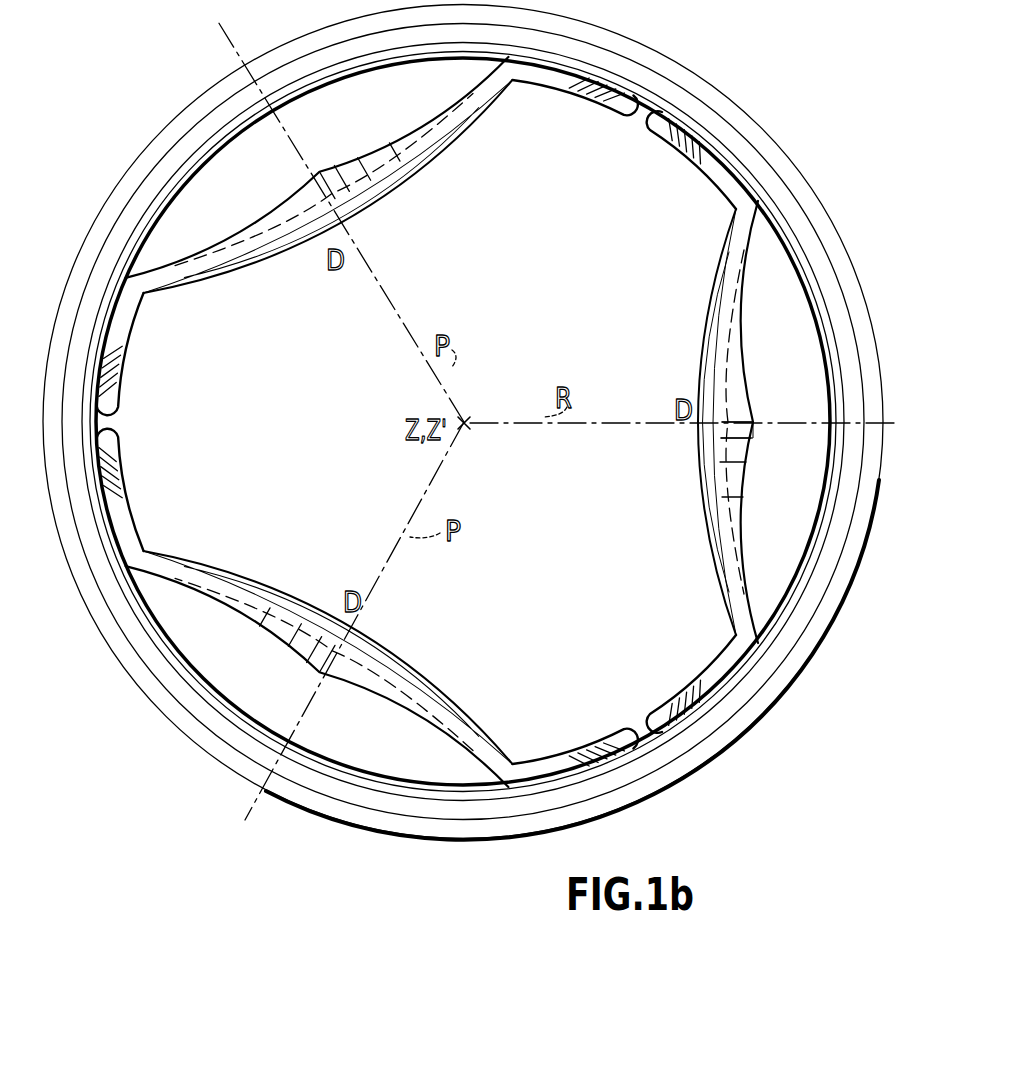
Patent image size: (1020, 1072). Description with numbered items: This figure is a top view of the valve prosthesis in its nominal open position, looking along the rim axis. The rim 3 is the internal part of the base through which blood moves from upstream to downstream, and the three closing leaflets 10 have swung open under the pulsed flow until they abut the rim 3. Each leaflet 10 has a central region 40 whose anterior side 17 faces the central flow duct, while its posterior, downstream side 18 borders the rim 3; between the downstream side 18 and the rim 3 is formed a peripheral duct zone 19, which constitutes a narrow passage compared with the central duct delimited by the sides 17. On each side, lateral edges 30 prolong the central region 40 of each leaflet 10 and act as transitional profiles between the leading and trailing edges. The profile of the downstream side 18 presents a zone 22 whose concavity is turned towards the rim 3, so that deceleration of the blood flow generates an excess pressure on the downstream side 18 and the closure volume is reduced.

The rim 3 is at (793, 238).
The closing leaflet 10 is at (270, 282).
The anterior side 17 is at (405, 186).
The posterior side 18 is at (387, 160).
The peripheral duct zone 19 is at (215, 172).
The zone of concavity 22 is at (748, 402).
The lateral edge 30 is at (590, 98).
The central region 40 is at (280, 218).